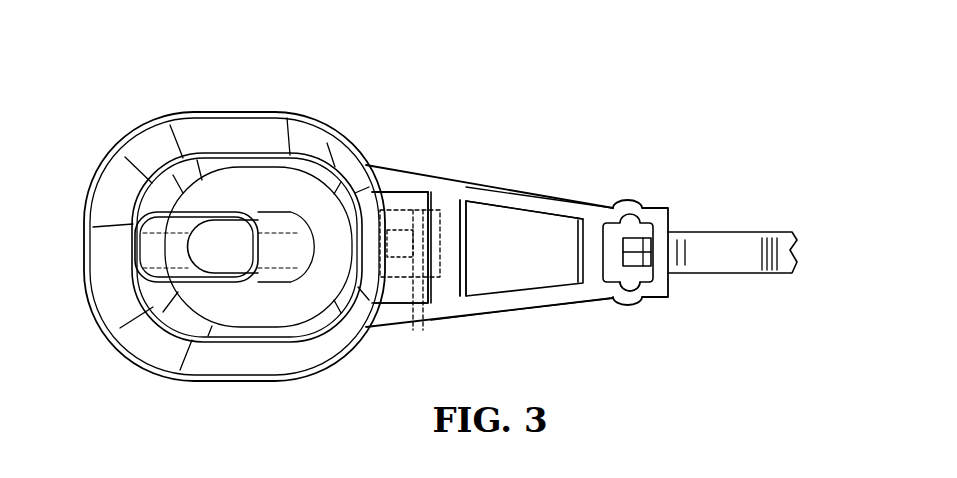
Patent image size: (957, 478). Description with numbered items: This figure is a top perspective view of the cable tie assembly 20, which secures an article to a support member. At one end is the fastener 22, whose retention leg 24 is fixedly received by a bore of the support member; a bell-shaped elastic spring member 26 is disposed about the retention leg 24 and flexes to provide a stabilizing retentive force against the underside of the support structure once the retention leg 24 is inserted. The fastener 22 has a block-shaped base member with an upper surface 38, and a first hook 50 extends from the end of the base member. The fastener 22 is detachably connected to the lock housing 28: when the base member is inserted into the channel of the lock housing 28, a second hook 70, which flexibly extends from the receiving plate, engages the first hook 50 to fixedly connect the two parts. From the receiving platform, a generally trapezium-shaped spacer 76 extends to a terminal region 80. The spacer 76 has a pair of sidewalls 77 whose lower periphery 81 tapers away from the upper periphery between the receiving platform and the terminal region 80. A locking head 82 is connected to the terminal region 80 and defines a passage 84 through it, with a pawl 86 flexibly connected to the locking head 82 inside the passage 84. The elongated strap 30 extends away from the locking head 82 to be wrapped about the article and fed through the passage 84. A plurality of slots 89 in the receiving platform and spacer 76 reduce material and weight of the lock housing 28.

The cable tie assembly 20 is at (553, 86).
The fastener 22 is at (225, 112).
The retention leg 24 is at (290, 250).
The spring member 26 is at (283, 363).
The lock housing 28 is at (532, 193).
The elongated strap 30 is at (748, 250).
The upper surface 38 is at (405, 265).
The first hook 50 is at (440, 232).
The second hook 70 is at (422, 307).
The spacer 76 is at (497, 185).
The sidewalls 77 is at (478, 186).
The terminal region 80 is at (590, 205).
The lower periphery 81 is at (492, 300).
The locking head 82 is at (650, 222).
The passage 84 is at (613, 267).
The pawl 86 is at (637, 257).
The slots 89 is at (395, 200).